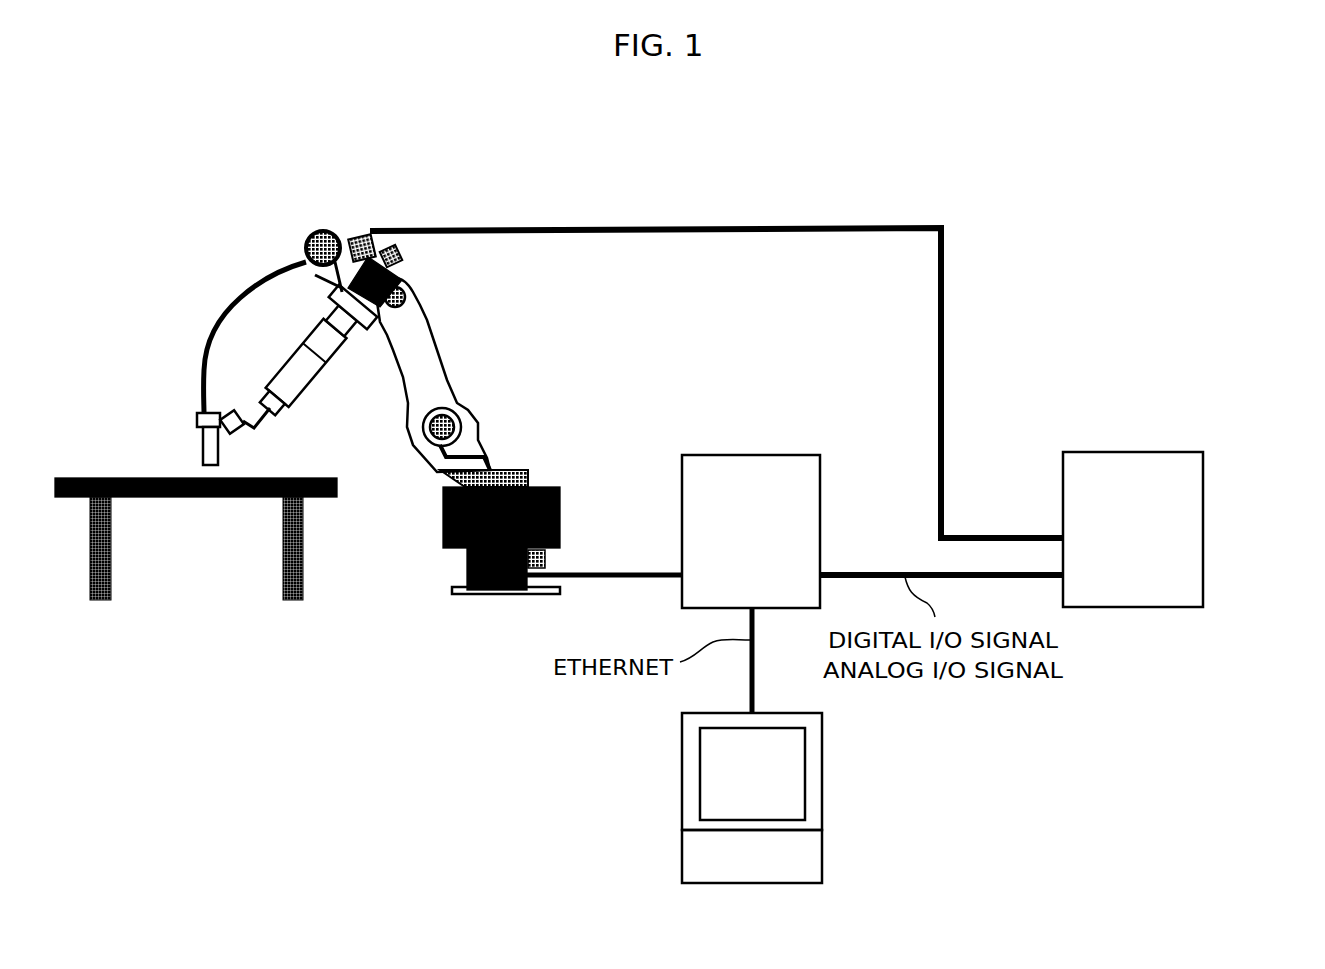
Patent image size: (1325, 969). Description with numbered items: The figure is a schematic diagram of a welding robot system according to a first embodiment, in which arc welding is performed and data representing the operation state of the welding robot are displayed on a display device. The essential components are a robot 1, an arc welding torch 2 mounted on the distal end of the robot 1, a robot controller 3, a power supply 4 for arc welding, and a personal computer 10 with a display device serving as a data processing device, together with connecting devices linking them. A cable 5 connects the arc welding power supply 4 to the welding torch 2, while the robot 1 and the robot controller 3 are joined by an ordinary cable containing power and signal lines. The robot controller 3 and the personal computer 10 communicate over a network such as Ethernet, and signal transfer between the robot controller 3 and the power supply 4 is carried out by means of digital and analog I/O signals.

The robot 1 is at (495, 371).
The arc welding torch 2 is at (190, 420).
The robot controller 3 is at (766, 455).
The power supply 4 is at (1203, 530).
The cable 5 is at (546, 228).
The personal computer 10 is at (850, 762).